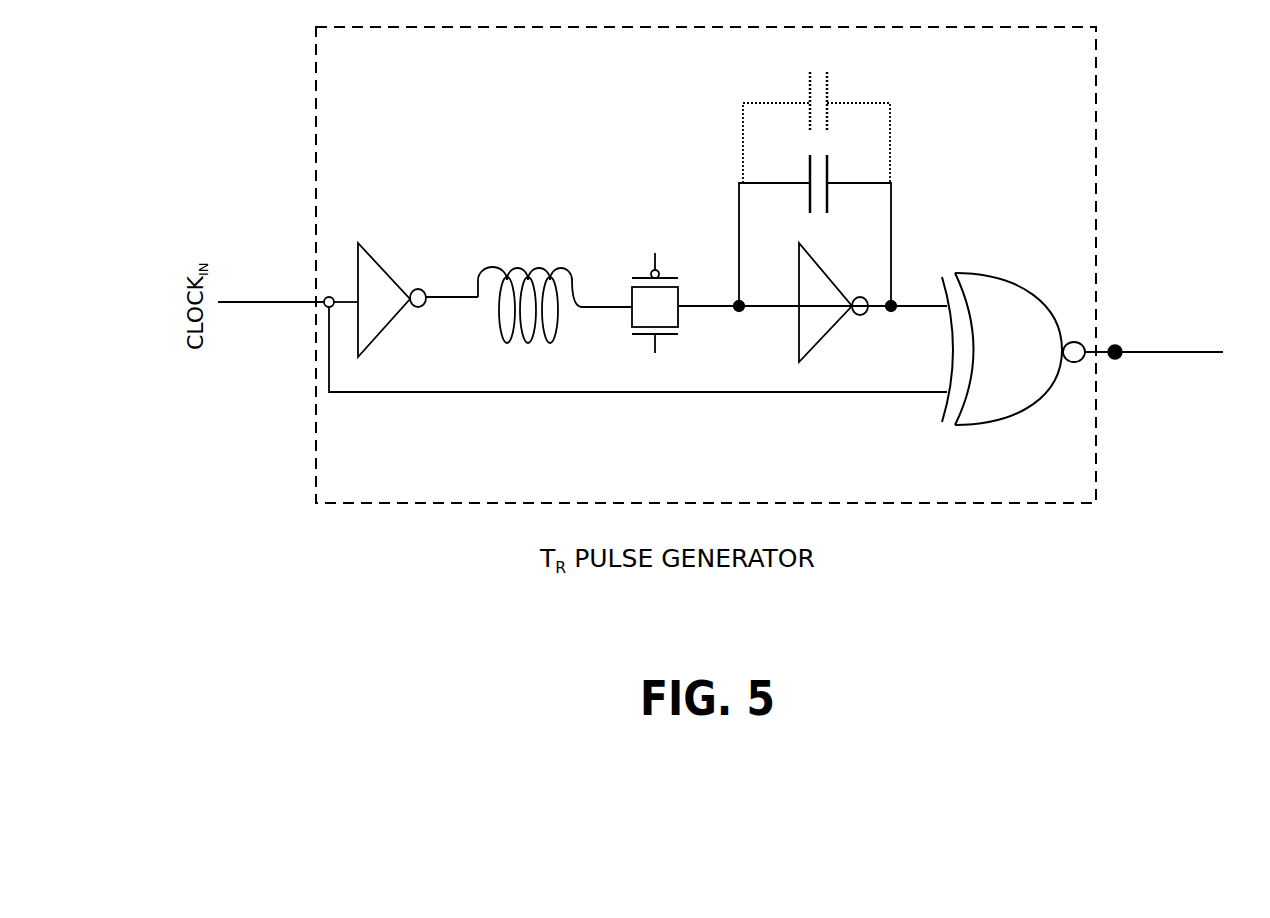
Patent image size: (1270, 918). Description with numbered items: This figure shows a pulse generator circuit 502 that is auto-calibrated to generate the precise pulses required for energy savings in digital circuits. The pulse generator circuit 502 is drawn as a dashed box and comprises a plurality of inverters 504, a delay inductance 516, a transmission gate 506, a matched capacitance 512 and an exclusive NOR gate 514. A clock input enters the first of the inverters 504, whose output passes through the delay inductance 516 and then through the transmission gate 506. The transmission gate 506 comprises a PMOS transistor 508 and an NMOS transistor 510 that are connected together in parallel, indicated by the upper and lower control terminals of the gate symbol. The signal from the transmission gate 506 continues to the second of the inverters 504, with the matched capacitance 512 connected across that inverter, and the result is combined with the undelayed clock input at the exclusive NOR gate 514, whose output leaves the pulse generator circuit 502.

The pulse generator circuit 502 is at (315, 475).
The inverters 504 is at (388, 323).
The transmission gate 506 is at (632, 327).
The PMOS transistor 508 is at (650, 273).
The NMOS transistor 510 is at (677, 335).
The matched capacitance 512 is at (827, 80).
The exclusive NOR (XNOR) gate 514 is at (1052, 307).
The delay inductance 516 is at (490, 268).